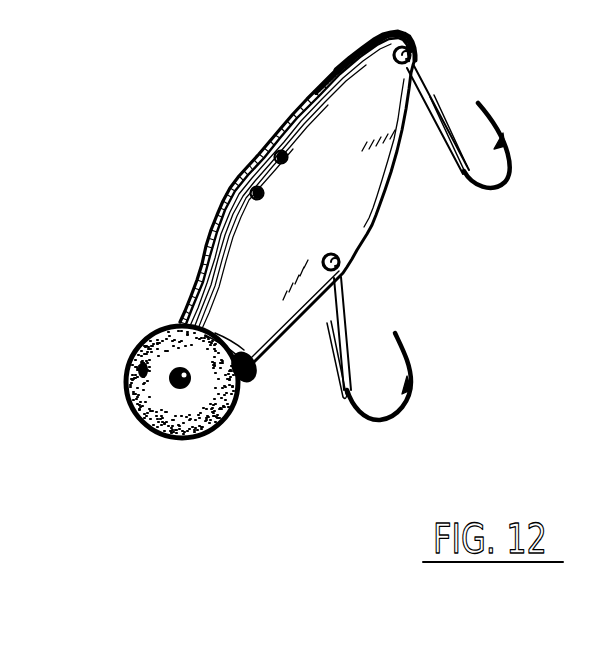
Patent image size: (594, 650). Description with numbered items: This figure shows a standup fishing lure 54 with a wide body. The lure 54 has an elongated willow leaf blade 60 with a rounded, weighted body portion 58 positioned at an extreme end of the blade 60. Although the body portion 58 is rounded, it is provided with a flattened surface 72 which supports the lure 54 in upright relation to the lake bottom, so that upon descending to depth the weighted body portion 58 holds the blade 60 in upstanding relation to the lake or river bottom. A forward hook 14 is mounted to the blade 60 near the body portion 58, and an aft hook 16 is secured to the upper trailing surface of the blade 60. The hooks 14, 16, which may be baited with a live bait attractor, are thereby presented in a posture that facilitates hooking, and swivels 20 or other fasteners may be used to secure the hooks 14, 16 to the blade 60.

The forward hook 14 is at (417, 400).
The aft hook 16 is at (517, 157).
The swivels 20 is at (252, 188).
The lure 54 is at (183, 215).
The body portion 58 is at (224, 425).
The blade 60 is at (310, 95).
The flattened surface 72 is at (145, 424).